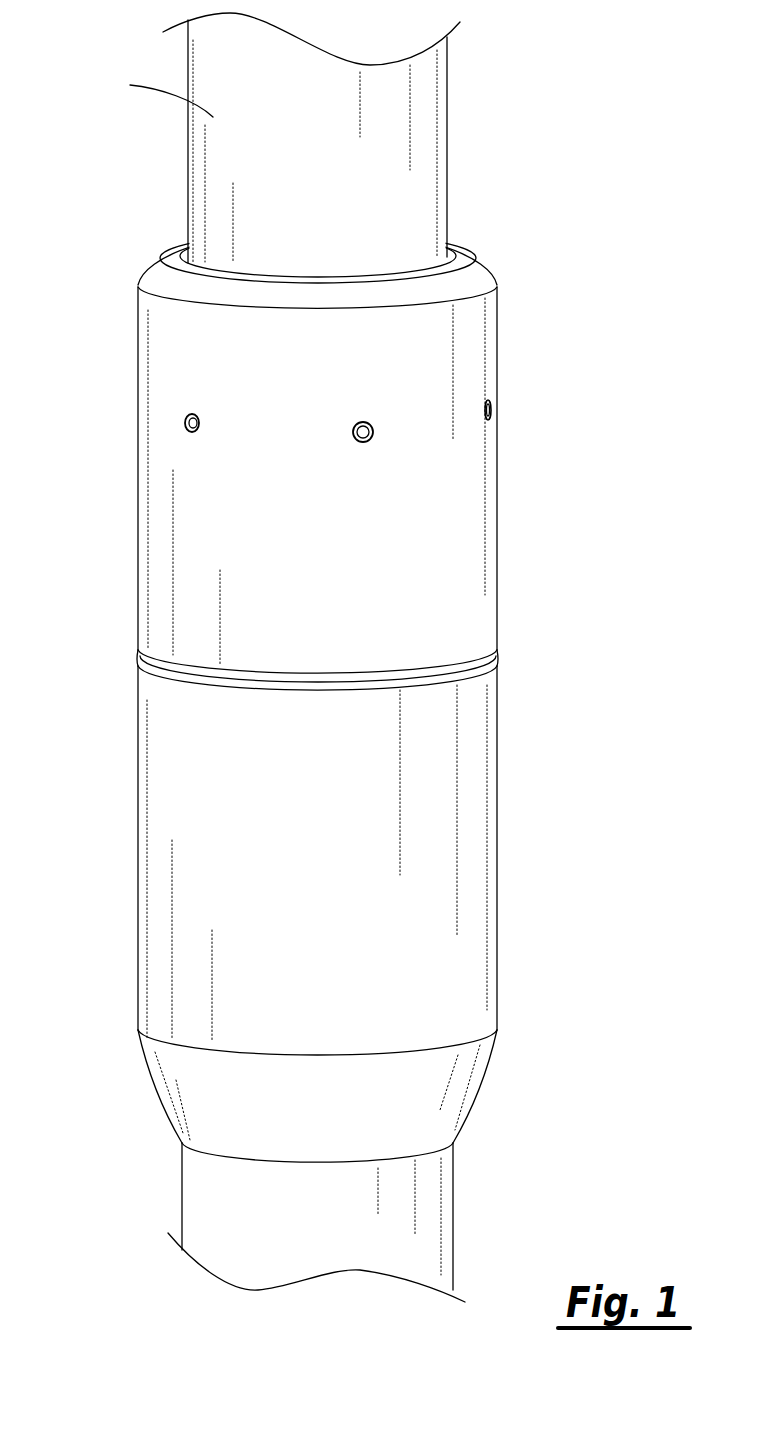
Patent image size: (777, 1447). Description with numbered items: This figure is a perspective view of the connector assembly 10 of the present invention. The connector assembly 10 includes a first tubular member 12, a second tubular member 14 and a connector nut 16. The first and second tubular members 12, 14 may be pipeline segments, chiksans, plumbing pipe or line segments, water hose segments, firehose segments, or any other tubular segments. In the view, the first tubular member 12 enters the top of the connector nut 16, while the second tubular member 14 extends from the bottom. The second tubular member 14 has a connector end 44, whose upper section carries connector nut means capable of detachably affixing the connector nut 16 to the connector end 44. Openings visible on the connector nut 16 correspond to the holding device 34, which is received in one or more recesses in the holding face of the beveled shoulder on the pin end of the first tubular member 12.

The connector assembly 10 is at (605, 318).
The first tubular member 12 is at (213, 117).
The second tubular member 14 is at (212, 1197).
The connector nut 16 is at (395, 567).
The holding device 34 is at (186, 426).
The connector end 44 is at (140, 799).